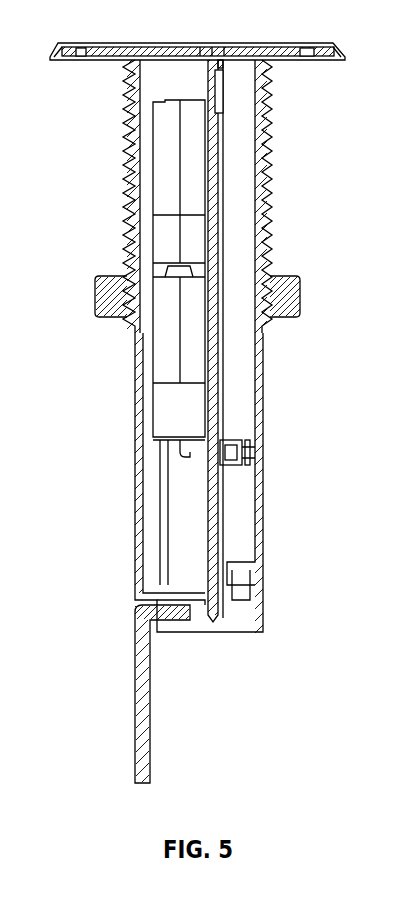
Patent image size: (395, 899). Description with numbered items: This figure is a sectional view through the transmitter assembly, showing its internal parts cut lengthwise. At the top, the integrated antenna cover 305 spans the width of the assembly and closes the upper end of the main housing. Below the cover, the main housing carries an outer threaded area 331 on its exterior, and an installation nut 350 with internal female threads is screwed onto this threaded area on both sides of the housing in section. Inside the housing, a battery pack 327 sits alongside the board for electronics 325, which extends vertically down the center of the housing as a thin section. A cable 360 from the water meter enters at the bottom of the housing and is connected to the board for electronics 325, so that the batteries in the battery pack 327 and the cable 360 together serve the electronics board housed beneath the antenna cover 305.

The integrated antenna cover 305 is at (197, 43).
The outer threaded area of main housing 331 is at (272, 186).
The installation nut 350 is at (300, 286).
The battery pack 327 is at (167, 343).
The board for electronics 325 is at (213, 538).
The cable 360 is at (150, 700).